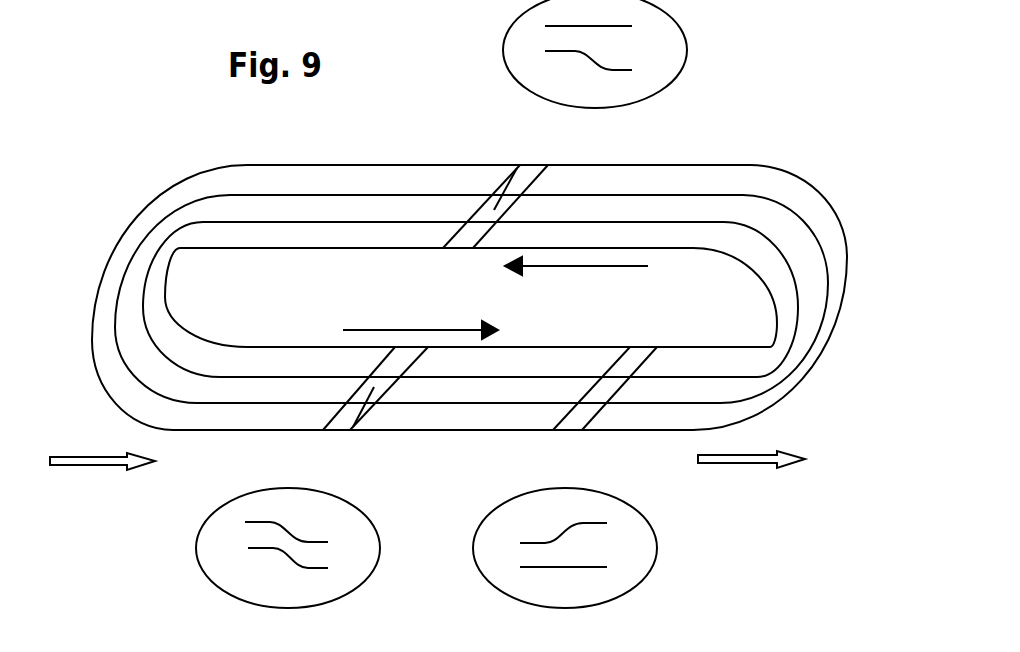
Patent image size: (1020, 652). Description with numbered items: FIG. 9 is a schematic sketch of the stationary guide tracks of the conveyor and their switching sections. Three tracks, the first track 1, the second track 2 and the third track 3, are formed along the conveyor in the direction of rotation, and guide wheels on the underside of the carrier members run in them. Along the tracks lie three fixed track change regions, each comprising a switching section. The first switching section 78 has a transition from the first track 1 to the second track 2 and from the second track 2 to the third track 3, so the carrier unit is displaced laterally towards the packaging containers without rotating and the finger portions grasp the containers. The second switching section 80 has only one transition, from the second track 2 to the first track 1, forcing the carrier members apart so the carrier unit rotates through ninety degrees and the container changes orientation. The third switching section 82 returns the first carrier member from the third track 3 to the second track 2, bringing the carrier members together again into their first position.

The first track 1 is at (702, 178).
The second track 2 is at (750, 215).
The third track 3 is at (780, 290).
The first switching section 78 is at (323, 430).
The second switching section 80 is at (603, 388).
The third switching section 82 is at (565, 105).